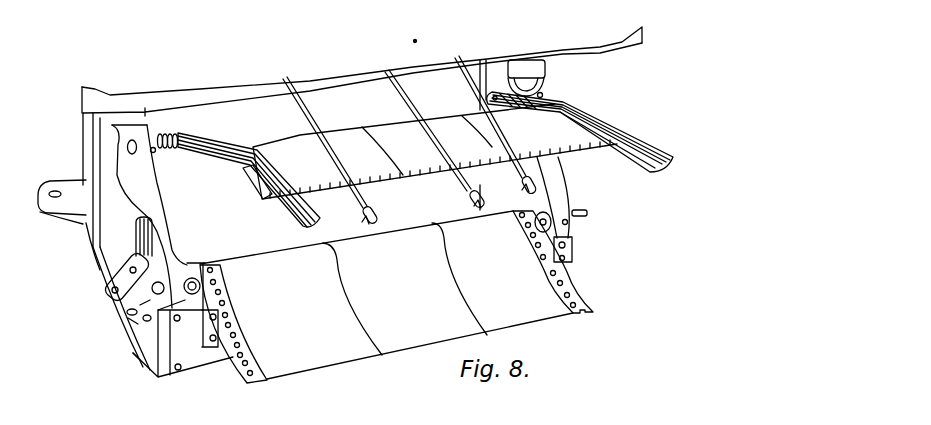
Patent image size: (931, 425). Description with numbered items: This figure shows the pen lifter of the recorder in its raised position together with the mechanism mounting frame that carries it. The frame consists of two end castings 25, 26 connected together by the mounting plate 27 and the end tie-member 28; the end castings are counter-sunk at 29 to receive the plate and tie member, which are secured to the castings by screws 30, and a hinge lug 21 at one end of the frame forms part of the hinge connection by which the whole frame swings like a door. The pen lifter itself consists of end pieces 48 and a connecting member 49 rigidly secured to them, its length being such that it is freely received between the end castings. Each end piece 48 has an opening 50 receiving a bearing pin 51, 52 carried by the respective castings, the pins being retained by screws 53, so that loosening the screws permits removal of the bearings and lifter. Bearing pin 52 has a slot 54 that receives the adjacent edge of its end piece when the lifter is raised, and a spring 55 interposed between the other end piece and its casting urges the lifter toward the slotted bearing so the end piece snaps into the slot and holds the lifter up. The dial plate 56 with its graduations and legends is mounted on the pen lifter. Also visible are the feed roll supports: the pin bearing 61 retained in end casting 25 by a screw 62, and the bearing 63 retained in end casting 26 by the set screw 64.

The hinge lug 21 is at (52, 225).
The end casting 25 is at (120, 230).
The end casting 26 is at (566, 200).
The mounting plate 27 is at (135, 97).
The end tie-member 28 is at (205, 362).
The counter-sink 29 is at (90, 112).
The screw 30 is at (177, 373).
The end piece 48 is at (230, 143).
The connecting member 49 is at (257, 185).
The opening 50 is at (488, 100).
The bearing pin 51 is at (128, 148).
The bearing pin 52 is at (505, 88).
The screw 53 is at (155, 152).
The slot 54 is at (530, 90).
The spring 55 is at (159, 134).
The dial plate 56 is at (373, 131).
The pin bearing 61 is at (164, 283).
The screw 62 is at (192, 265).
The bearing 63 is at (587, 216).
The set screw 64 is at (567, 225).